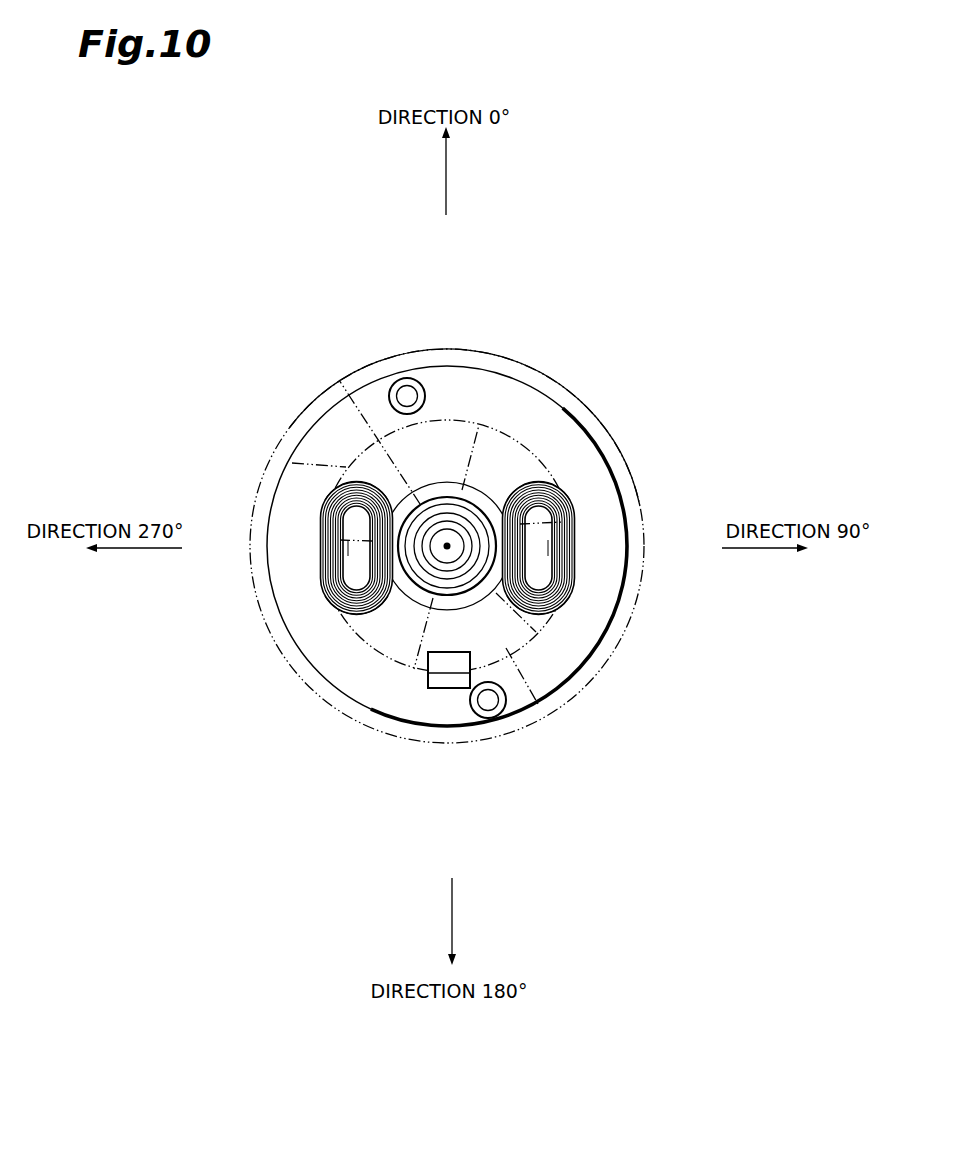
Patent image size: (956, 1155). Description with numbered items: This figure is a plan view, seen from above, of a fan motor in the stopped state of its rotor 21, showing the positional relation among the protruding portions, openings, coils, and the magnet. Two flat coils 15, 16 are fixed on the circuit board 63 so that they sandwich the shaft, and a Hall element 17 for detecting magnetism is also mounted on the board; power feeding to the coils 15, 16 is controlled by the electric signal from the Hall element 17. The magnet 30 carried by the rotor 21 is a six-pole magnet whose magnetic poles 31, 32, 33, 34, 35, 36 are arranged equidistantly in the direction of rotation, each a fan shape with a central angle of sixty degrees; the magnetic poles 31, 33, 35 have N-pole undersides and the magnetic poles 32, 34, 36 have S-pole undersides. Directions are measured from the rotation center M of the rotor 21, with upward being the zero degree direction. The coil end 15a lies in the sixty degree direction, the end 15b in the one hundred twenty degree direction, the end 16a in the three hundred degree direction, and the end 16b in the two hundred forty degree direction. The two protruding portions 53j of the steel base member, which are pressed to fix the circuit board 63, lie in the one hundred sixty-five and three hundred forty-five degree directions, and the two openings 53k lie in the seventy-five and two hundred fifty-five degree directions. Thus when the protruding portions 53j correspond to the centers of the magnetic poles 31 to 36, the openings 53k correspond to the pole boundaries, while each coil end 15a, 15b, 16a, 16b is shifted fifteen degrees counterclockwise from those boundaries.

The coil 15 is at (577, 510).
The end of coil 15a is at (548, 478).
The end of coil 15b is at (551, 616).
The coil 16 is at (322, 535).
The end of coil 16a is at (336, 482).
The end of coil 16b is at (351, 614).
The Hall element 17 is at (456, 690).
The rotor 21 is at (452, 347).
The magnet 30 is at (366, 443).
The magnetic pole 31 is at (545, 537).
The magnetic pole 32 is at (548, 715).
The magnetic pole 33 is at (395, 640).
The magnetic pole 34 is at (292, 463).
The magnetic pole 35 is at (401, 447).
The magnetic pole 36 is at (520, 469).
The protruding portion 53j is at (405, 378).
The opening 53k is at (318, 568).
The circuit board 63 is at (503, 393).
The rotation center M is at (447, 546).